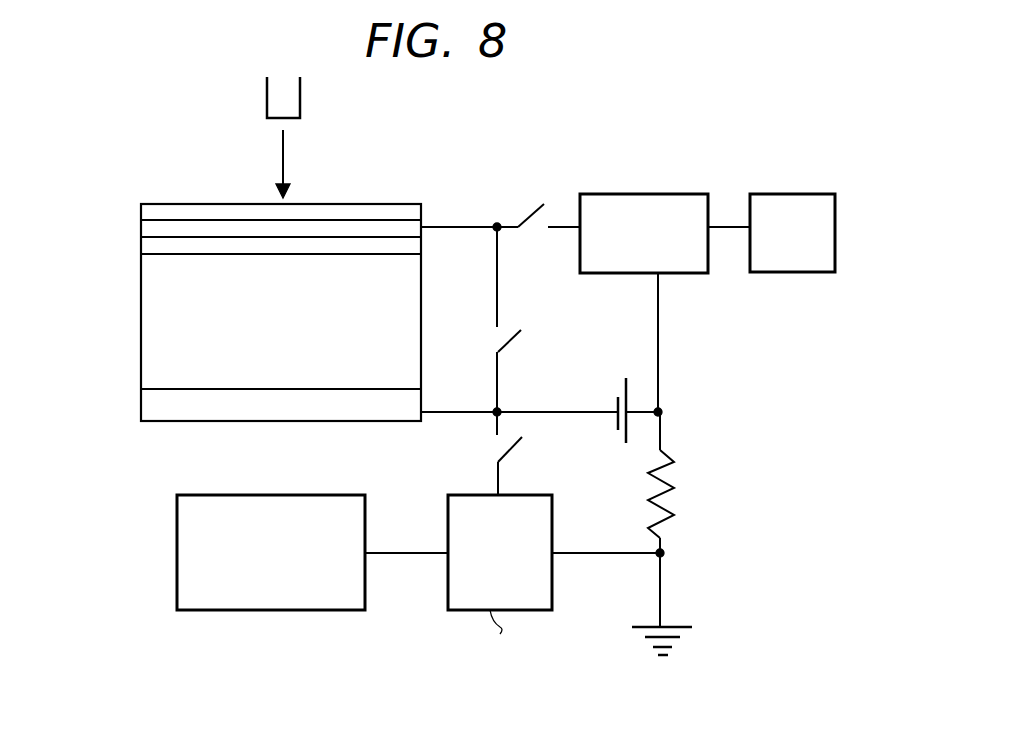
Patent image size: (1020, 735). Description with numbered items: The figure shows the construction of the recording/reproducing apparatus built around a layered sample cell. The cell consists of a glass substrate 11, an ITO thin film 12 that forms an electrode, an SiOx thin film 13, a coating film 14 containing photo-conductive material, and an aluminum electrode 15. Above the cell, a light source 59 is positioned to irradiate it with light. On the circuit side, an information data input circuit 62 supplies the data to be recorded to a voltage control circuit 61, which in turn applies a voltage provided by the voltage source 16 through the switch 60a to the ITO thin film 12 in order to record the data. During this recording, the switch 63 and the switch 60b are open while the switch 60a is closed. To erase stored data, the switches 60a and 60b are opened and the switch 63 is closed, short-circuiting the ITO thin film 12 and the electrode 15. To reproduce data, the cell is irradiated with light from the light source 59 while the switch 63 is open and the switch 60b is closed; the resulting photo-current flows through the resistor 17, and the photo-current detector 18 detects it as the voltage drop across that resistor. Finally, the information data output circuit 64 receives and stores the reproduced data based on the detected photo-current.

The glass substrate 11 is at (148, 213).
The ITO thin film 12 is at (148, 230).
The SiOx thin film 13 is at (148, 250).
The coating film 14 is at (150, 322).
The aluminum electrode 15 is at (152, 406).
The light source 59 is at (302, 100).
The switch 60a is at (530, 206).
The switch 60b is at (490, 451).
The voltage control circuit 61 is at (644, 233).
The information data input circuit 62 is at (792, 233).
The switch 63 is at (521, 342).
The voltage source 16 is at (617, 400).
The resistor 17 is at (673, 497).
The photo-current detector 18 is at (505, 589).
The information data output circuit 64 is at (271, 552).